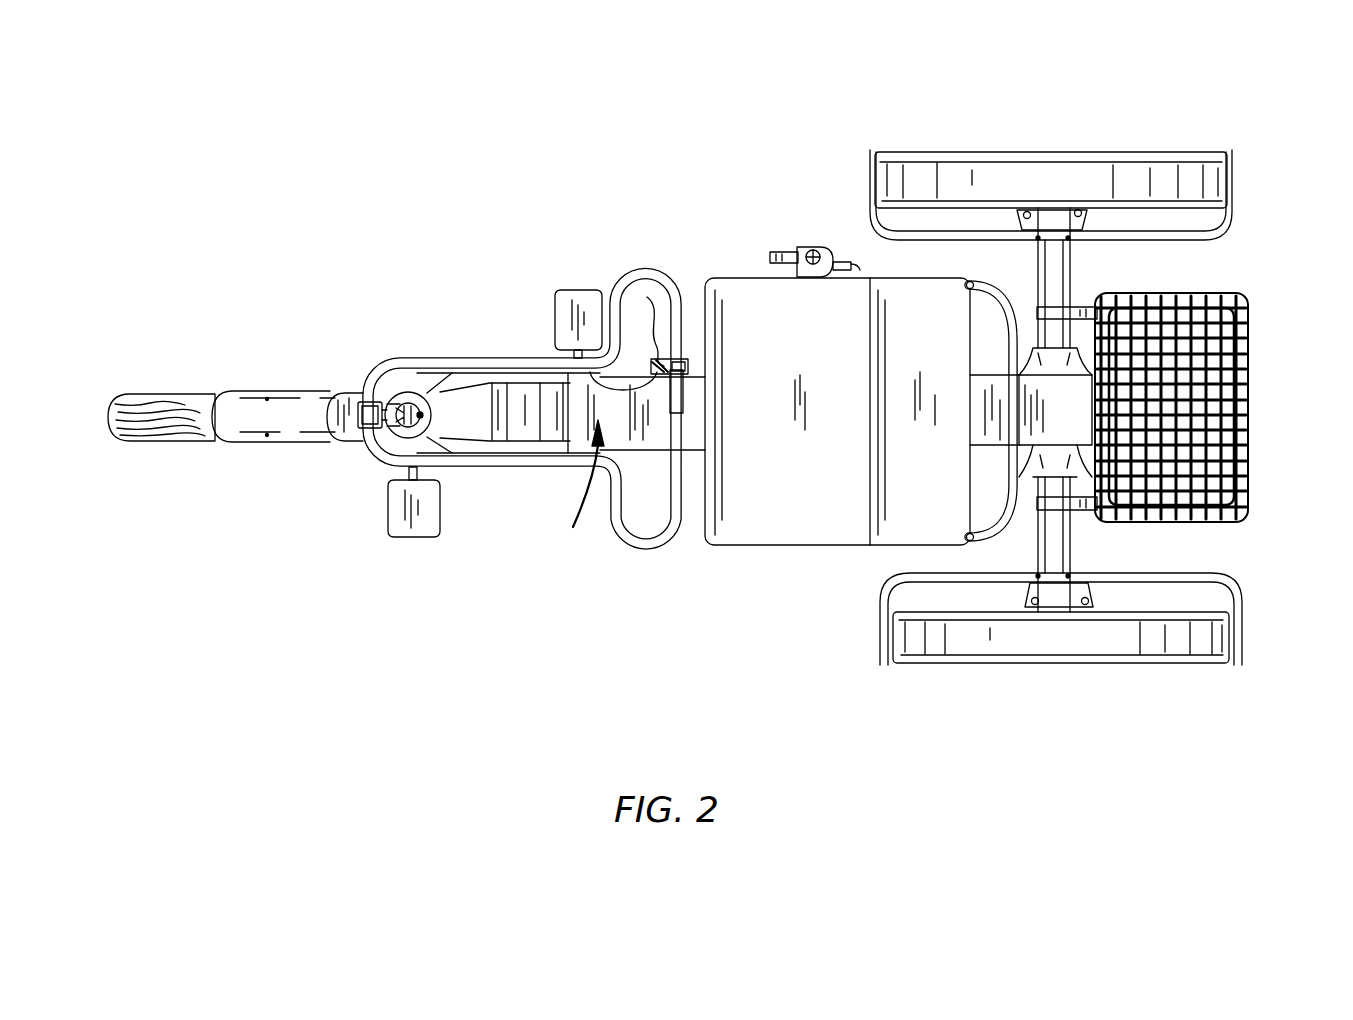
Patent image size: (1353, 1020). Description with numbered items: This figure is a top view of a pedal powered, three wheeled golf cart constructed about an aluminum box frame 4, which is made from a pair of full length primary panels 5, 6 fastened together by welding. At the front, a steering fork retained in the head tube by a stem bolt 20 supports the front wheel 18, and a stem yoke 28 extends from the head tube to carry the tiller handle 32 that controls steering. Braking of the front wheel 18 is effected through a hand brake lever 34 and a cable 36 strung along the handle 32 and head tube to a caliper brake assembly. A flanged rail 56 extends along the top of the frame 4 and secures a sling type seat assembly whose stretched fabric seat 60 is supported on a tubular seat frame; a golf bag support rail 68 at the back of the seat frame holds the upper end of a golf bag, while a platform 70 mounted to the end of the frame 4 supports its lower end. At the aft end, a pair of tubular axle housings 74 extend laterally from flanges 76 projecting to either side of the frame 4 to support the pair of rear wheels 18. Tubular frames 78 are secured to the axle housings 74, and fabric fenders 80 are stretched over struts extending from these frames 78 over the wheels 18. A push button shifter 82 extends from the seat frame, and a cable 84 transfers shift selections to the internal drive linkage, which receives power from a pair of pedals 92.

The aluminum box frame 4 is at (577, 488).
The primary panel 5 is at (507, 397).
The primary panel 6 is at (513, 437).
The wheel 18 is at (167, 397).
The stem bolt 20 is at (433, 417).
The stem yoke 28 is at (377, 462).
The tiller handle 32 is at (649, 560).
The hand brake lever 34 is at (650, 298).
The cable 36 is at (440, 387).
The flanged rail 56 is at (640, 450).
The fabric seat 60 is at (814, 508).
The golf bag support rail 68 is at (1030, 345).
The platform 70 is at (1243, 462).
The tubular axle housing 74 is at (1067, 273).
The flange 76 is at (1057, 458).
The tubular frame 78 is at (870, 222).
The fabric fender 80 is at (948, 180).
The push button shifter 82 is at (808, 250).
The cable 84 is at (866, 266).
The pedal 92 is at (562, 290).